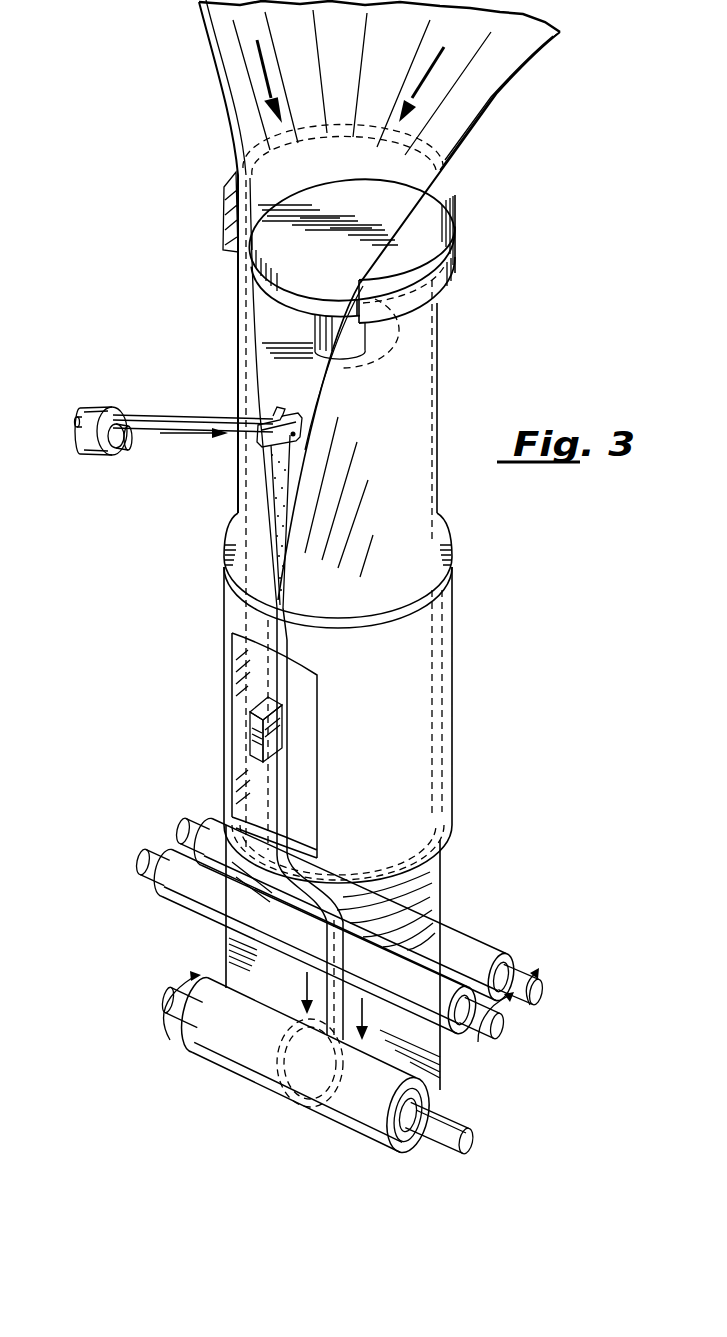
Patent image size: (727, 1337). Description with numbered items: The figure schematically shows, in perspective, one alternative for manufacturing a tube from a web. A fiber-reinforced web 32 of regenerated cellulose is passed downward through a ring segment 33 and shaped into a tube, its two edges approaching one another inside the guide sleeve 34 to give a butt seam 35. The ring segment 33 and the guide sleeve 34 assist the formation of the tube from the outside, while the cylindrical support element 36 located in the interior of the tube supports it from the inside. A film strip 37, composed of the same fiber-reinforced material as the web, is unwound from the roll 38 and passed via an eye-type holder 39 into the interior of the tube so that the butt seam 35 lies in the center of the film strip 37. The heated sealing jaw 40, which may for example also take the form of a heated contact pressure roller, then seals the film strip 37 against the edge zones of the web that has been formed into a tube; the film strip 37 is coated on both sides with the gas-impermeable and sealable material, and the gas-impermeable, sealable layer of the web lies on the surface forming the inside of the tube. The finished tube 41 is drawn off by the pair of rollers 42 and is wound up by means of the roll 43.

The fiber-reinforced web 32 is at (474, 88).
The ring segment 33 is at (457, 243).
The guide sleeve 34 is at (453, 768).
The butt seam 35 is at (282, 688).
The cylindrical support element 36 is at (305, 201).
The film strip 37 is at (172, 414).
The roll 38 is at (93, 452).
The eye-type holder 39 is at (296, 414).
The heated sealing jaw 40 is at (280, 747).
The tube 41 is at (428, 897).
The pair of rollers 42 is at (518, 1023).
The roll 43 is at (474, 1140).